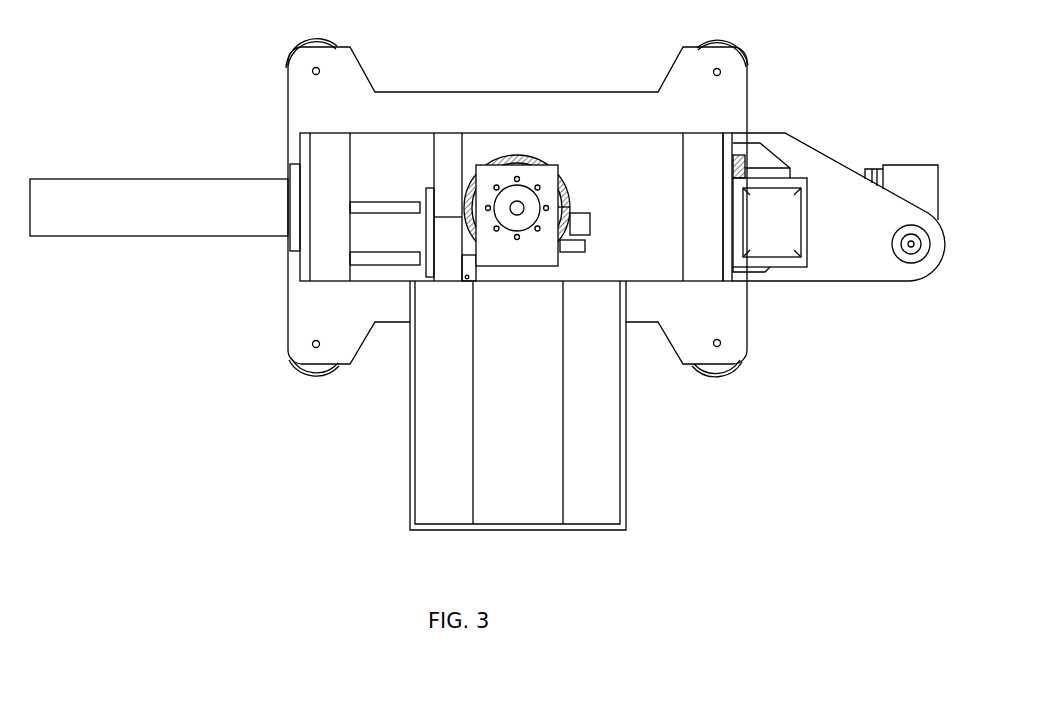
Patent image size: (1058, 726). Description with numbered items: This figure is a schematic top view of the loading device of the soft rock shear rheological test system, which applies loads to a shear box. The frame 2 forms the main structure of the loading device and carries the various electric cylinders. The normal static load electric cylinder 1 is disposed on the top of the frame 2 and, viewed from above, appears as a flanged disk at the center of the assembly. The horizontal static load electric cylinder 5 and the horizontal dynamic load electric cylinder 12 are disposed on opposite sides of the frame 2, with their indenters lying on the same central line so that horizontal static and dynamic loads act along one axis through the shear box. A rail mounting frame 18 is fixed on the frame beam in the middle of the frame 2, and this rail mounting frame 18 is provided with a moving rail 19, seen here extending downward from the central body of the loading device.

The normal static load electric cylinder 1 is at (519, 203).
The frame 2 is at (747, 69).
The horizontal static load electric cylinder 5 is at (922, 195).
The horizontal dynamic load electric cylinder 12 is at (160, 179).
The rail mounting frame 18 is at (626, 460).
The moving rail 19 is at (563, 503).